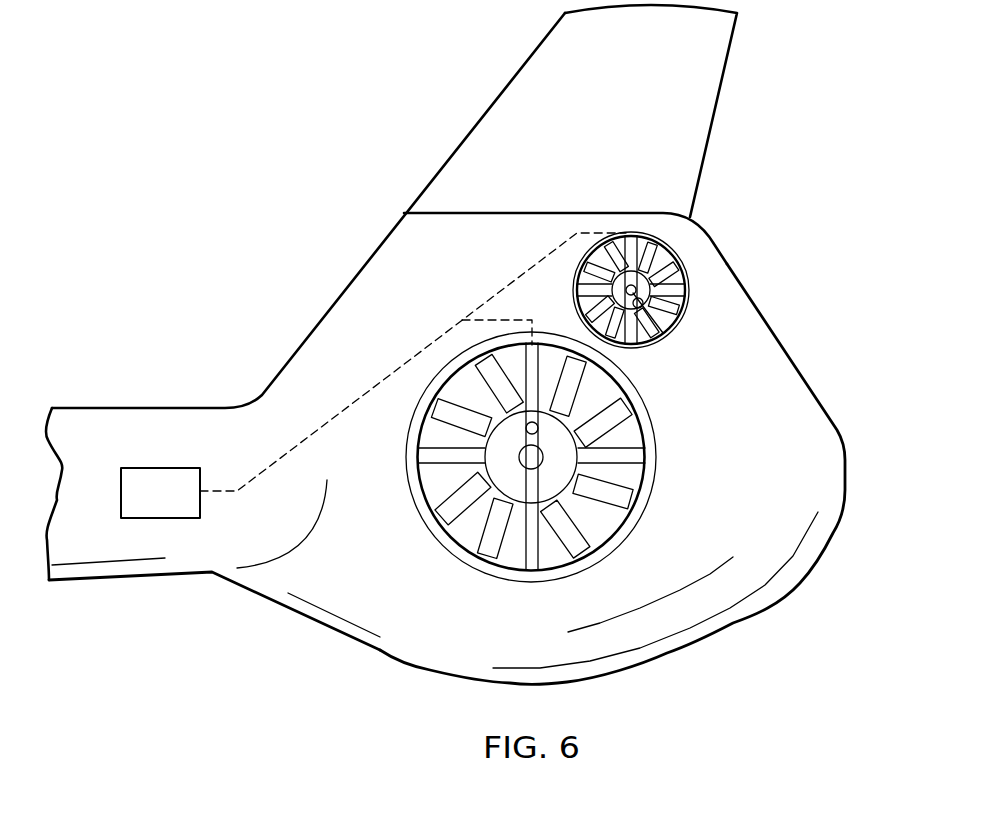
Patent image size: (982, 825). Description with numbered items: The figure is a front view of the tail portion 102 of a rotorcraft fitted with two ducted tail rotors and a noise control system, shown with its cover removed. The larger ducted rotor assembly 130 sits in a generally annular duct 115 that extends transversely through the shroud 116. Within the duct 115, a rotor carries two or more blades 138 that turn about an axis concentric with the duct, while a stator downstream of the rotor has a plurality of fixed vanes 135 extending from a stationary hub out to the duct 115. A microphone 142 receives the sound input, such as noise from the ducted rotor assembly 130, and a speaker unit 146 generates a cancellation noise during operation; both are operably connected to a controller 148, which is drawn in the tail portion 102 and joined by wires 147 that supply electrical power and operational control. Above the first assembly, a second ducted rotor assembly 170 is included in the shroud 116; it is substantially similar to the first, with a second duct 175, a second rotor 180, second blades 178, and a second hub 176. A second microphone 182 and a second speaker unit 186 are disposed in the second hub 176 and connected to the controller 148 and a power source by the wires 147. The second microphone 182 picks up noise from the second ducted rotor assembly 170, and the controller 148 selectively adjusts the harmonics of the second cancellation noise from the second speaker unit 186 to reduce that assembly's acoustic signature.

The tail portion 102 is at (134, 582).
The duct 115 is at (653, 440).
The shroud 116 is at (433, 660).
The ducted rotor assembly 130 is at (531, 470).
The fixed vanes 135 is at (522, 372).
The blades 138 is at (563, 549).
The microphone 142 is at (526, 429).
The speaker unit 146 is at (522, 462).
The wires 147 is at (378, 385).
The controller 148 is at (178, 506).
The second ducted rotor assembly 170 is at (634, 274).
The second duct 175 is at (683, 270).
The second hub 176 is at (577, 262).
The second blades 178 is at (648, 236).
The second rotor 180 is at (562, 297).
The second microphone 182 is at (675, 331).
The second speaker unit 186 is at (652, 344).